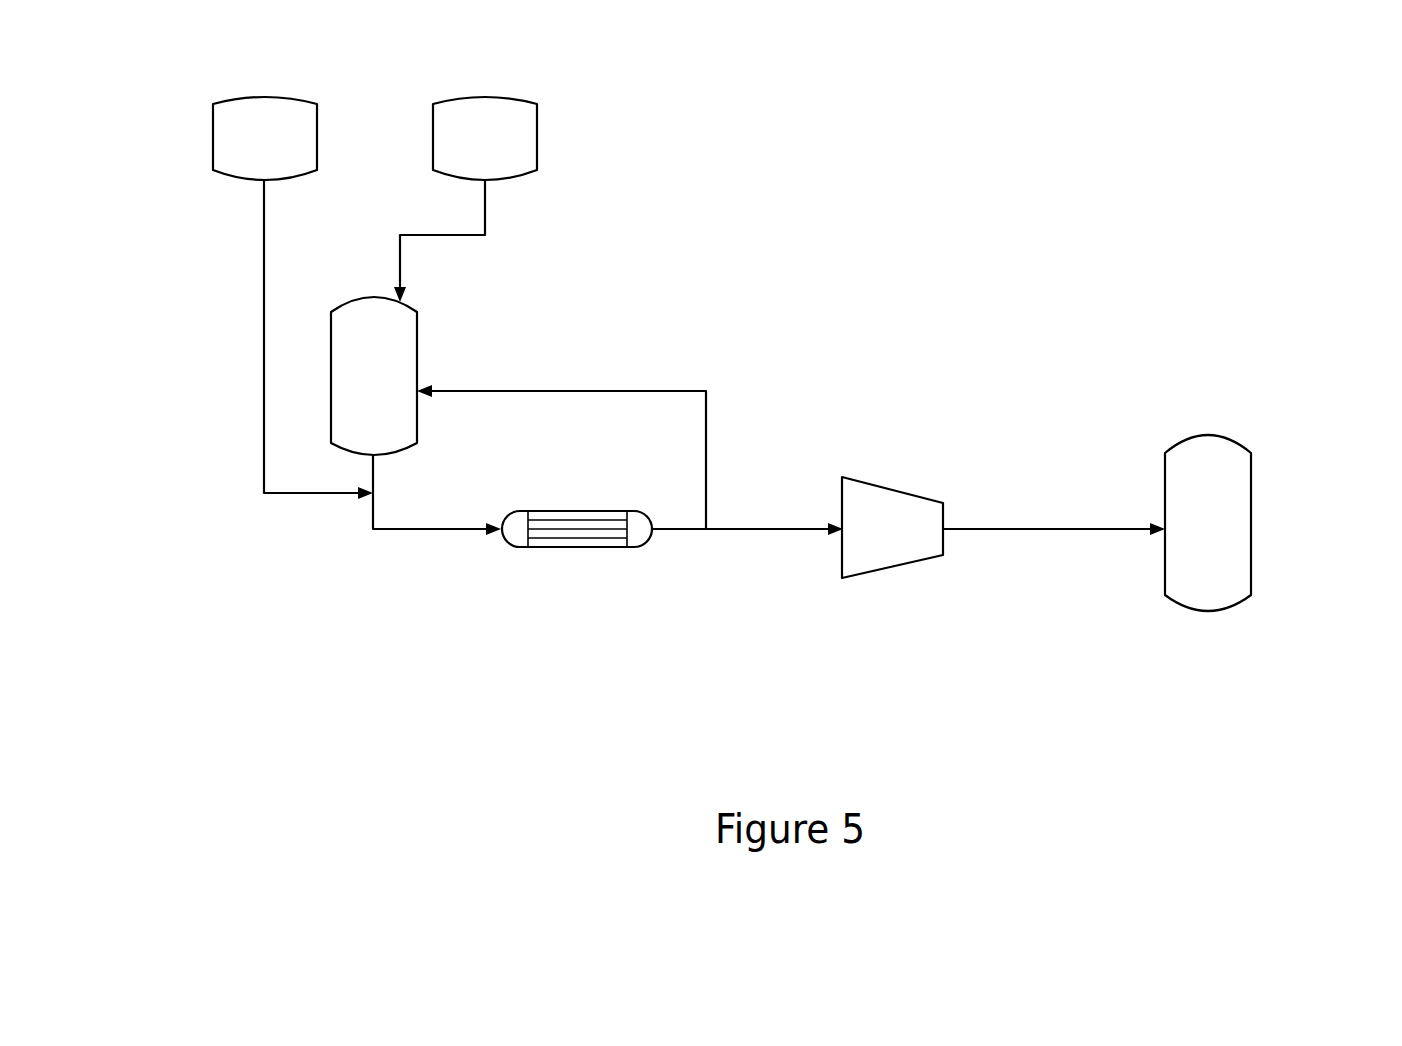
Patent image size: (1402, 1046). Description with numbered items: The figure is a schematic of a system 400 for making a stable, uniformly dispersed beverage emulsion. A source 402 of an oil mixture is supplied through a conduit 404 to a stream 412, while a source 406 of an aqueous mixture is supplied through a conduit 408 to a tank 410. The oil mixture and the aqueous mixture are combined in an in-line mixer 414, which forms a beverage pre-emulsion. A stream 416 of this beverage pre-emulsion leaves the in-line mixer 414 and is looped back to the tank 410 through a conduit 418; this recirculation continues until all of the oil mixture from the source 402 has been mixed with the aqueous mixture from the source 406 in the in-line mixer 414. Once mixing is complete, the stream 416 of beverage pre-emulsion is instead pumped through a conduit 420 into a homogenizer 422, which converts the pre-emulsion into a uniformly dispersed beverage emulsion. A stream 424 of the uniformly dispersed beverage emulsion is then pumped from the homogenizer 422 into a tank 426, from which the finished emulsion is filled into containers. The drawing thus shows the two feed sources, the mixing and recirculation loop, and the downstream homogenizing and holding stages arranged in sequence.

The system 400 is at (764, 220).
The source of an oil mixture 402 is at (213, 140).
The conduit 404 is at (263, 425).
The source of an aqueous mixture 406 is at (537, 147).
The conduit 408 is at (485, 217).
The tank 410 is at (417, 356).
The stream 412 is at (413, 529).
The in-line mixer 414 is at (578, 547).
The stream of the beverage pre-emulsion 416 is at (687, 529).
The conduit 418 is at (653, 391).
The conduit 420 is at (747, 529).
The homogenizer 422 is at (893, 487).
The stream of the uniformly dispersed beverage emulsion 424 is at (1072, 529).
The tank 426 is at (1251, 528).